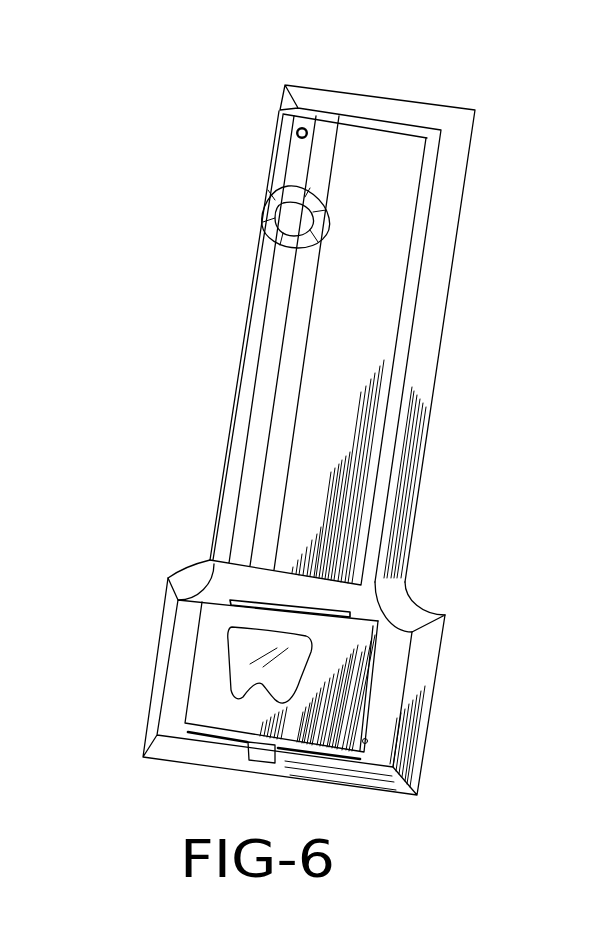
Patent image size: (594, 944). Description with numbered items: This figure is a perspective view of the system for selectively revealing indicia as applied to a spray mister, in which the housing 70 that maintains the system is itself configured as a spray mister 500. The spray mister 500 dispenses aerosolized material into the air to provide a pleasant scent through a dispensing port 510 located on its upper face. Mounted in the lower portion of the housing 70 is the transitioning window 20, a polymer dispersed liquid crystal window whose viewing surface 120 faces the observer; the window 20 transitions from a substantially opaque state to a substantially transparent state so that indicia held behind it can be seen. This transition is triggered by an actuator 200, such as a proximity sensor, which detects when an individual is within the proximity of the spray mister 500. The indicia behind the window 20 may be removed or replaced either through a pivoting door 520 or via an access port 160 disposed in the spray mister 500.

The housing 70 is at (452, 317).
The spray mister 500 is at (238, 372).
The dispensing port 510 is at (290, 227).
The access port 160 is at (243, 597).
The viewing surface 120 is at (198, 648).
The transitioning window 20 is at (230, 666).
The actuator 200 is at (263, 752).
The pivoting door 520 is at (333, 733).